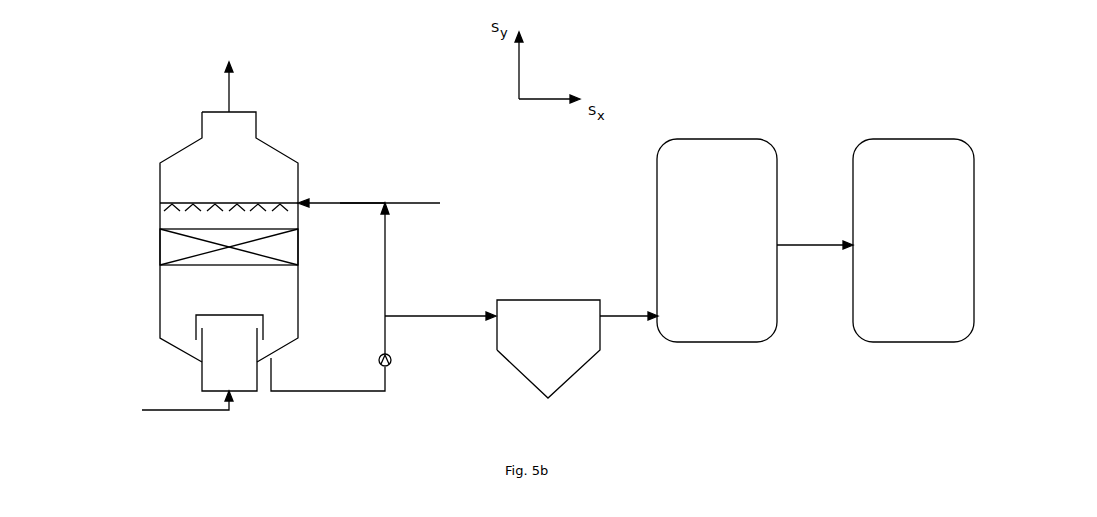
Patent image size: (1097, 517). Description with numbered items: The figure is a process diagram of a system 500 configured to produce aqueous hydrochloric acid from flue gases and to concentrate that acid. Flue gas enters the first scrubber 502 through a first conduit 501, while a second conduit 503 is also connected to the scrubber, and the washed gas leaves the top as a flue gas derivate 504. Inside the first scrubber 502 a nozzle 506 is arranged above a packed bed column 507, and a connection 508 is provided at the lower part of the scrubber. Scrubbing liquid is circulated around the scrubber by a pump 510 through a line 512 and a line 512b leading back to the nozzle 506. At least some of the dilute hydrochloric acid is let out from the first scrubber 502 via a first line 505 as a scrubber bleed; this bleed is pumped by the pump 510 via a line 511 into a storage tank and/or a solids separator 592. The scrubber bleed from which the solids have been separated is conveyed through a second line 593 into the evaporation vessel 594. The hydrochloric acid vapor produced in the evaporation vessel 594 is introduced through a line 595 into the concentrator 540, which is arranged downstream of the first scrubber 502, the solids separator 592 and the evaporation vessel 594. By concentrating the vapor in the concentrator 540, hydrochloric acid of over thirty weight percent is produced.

The system 500 is at (140, 104).
The first conduit 501 is at (190, 411).
The first scrubber 502 is at (160, 180).
The second conduit 503 is at (417, 201).
The flue gas derivate 504 is at (229, 103).
The first line 505 is at (300, 389).
The nozzle 506 is at (300, 208).
The packed bed column 507 is at (168, 248).
The connection 508 is at (200, 368).
The pump 510 is at (392, 360).
The line 511 is at (400, 314).
The line 512 is at (387, 252).
The line 512b is at (332, 201).
The solids separator 592 is at (543, 300).
The second line 593 is at (620, 313).
The evaporation vessel 594 is at (713, 343).
The line 595 is at (805, 243).
The concentrator 540 is at (908, 343).